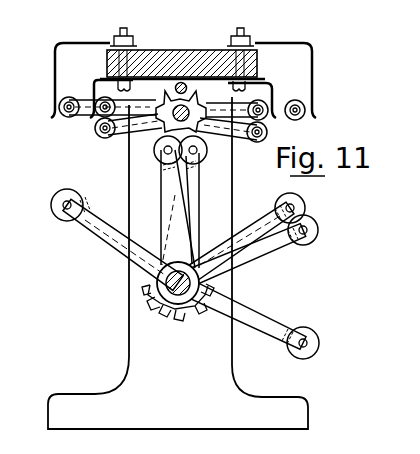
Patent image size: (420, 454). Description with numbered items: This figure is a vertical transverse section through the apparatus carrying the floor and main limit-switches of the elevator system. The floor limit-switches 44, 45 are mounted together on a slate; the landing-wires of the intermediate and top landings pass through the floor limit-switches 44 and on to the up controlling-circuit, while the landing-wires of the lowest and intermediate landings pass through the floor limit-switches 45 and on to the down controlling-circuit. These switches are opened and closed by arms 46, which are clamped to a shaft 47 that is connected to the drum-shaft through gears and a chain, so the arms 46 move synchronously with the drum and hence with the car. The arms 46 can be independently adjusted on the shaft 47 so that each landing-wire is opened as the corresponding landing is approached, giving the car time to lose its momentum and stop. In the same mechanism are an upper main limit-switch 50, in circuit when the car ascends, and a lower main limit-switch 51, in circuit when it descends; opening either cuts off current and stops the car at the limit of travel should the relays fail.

The floor limit-switch 44 is at (263, 123).
The floor limit-switch 45 is at (100, 120).
The arm 46 is at (110, 237).
The shaft 47 is at (182, 297).
The upper main limit-switch 50 is at (314, 115).
The lower main limit-switch 51 is at (62, 118).